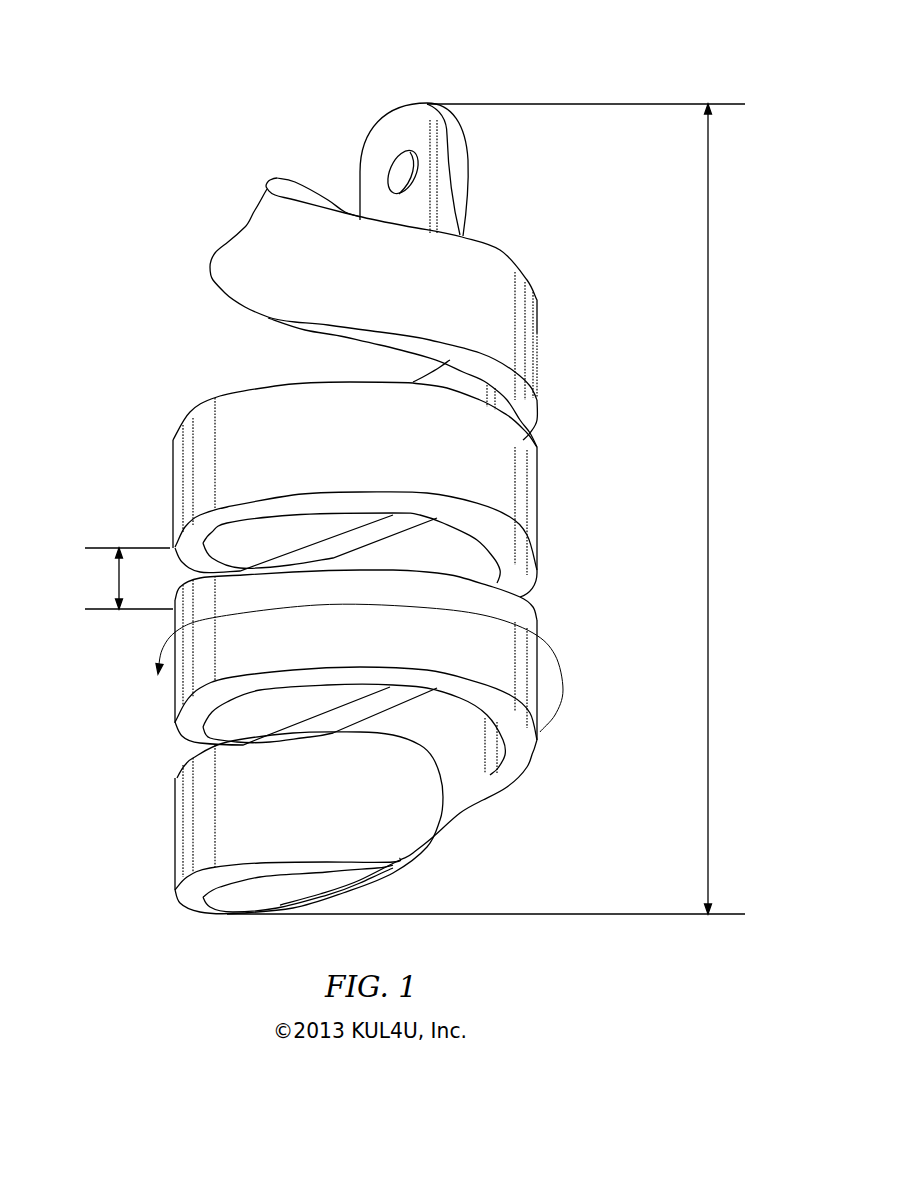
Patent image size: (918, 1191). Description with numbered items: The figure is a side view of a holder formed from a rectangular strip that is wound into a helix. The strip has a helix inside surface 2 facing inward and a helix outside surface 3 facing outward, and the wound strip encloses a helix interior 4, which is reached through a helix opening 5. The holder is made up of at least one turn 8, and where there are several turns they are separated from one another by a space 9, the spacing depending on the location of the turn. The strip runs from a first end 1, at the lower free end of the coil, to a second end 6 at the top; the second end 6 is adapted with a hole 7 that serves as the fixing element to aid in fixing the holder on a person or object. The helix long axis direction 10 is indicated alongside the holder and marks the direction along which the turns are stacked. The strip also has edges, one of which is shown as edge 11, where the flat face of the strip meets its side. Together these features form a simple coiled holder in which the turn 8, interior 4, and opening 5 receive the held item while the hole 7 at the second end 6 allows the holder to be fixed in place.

The first end 1 is at (395, 866).
The helix inside surface 2 is at (480, 750).
The helix outside surface 3 is at (168, 827).
The helix interior 4 is at (243, 715).
The helix opening 5 is at (240, 892).
The second end 6 is at (502, 80).
The hole 7 is at (390, 172).
The turn 8 is at (558, 663).
The space 9 is at (119, 578).
The helix long axis direction 10 is at (708, 183).
The edge 11 is at (532, 408).